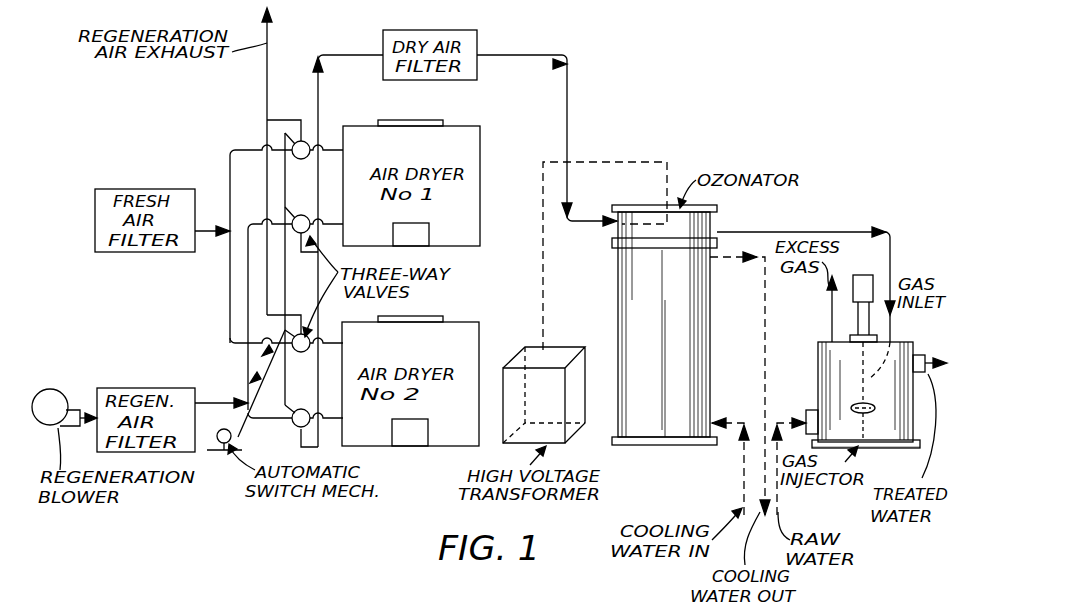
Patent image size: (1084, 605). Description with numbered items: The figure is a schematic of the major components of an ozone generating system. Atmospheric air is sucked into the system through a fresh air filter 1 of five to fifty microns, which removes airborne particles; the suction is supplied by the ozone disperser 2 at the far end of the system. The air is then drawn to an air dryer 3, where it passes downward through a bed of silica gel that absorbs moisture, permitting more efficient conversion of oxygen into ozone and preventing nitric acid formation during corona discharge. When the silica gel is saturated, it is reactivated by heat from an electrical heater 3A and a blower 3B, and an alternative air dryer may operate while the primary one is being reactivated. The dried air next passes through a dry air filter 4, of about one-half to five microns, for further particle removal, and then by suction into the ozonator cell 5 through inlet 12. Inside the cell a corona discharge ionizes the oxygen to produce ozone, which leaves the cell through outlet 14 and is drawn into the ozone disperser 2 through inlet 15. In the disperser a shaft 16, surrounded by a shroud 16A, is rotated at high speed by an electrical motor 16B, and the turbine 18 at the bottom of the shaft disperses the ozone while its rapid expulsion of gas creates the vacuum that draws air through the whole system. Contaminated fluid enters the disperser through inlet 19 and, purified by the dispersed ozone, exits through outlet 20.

The fresh air filter 1 is at (95, 201).
The ozone disperser 2 is at (815, 355).
The air dryer 3 is at (480, 178).
The electrical heater 3A is at (429, 240).
The blower 3B is at (58, 389).
The dry air filter 4 is at (435, 30).
The ozonator cell 5 is at (715, 223).
The inlet 12 is at (600, 222).
The outlet 14 is at (806, 276).
The inlet 15 is at (897, 332).
The shaft 16 is at (856, 318).
The shroud 16A is at (850, 405).
The electrical motor 16B is at (876, 282).
The turbine 18 is at (869, 448).
The inlet 19 is at (806, 431).
The outlet 20 is at (927, 360).